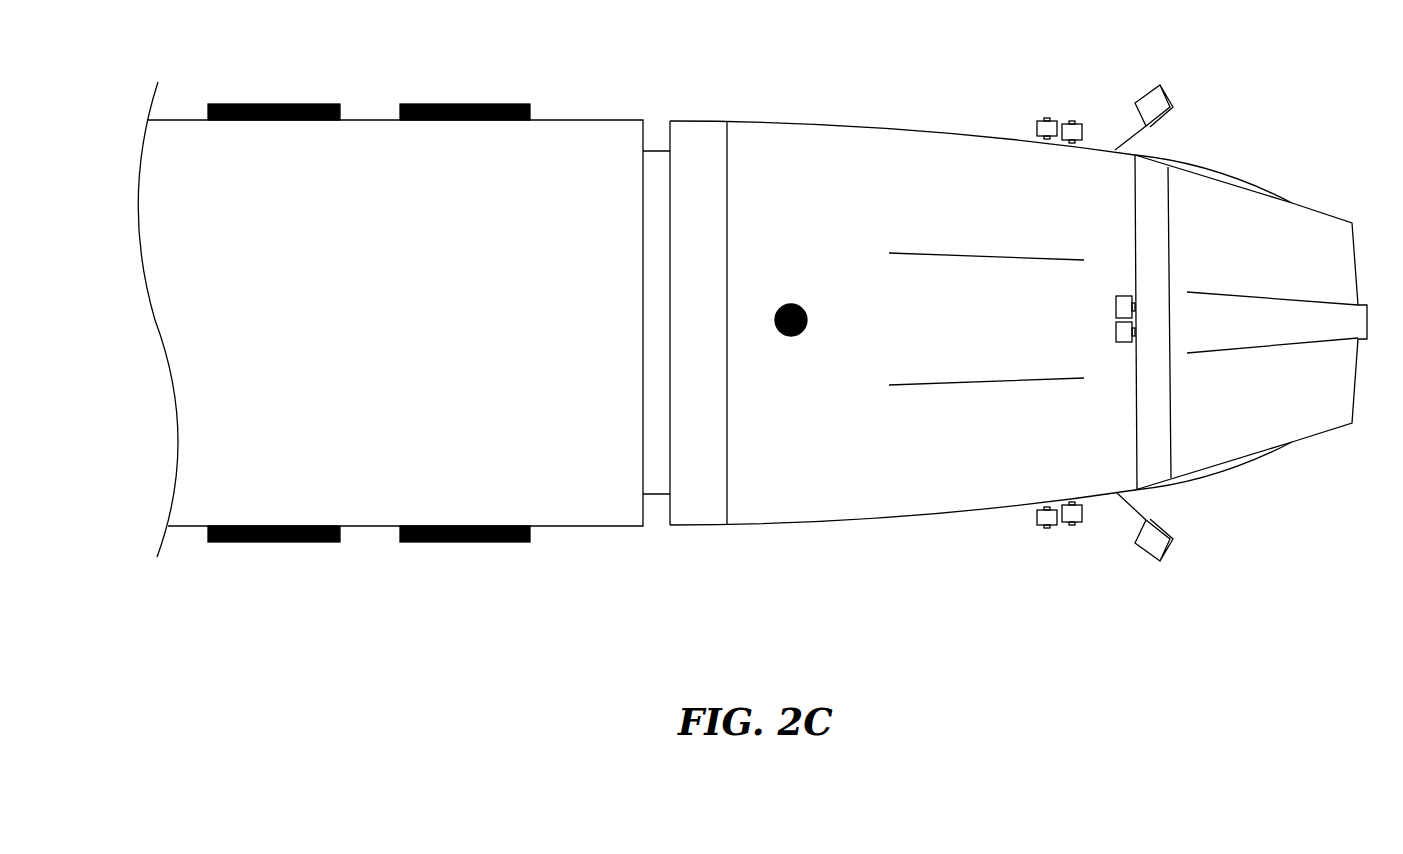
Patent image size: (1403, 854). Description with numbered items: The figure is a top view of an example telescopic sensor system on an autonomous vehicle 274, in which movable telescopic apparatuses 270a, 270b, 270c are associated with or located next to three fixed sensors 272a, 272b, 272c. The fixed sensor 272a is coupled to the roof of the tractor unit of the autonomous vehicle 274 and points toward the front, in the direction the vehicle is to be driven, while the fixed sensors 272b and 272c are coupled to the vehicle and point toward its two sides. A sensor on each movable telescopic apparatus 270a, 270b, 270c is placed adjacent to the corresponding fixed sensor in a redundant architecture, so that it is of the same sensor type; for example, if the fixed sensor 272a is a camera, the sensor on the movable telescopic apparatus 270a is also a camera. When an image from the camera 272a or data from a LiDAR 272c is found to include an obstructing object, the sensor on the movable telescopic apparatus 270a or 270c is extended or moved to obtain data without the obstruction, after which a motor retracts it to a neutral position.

The autonomous vehicle 274 is at (852, 140).
The movable telescopic apparatus 270a is at (1116, 310).
The movable telescopic apparatus 270b is at (1037, 128).
The movable telescopic apparatus 270c is at (1037, 518).
The fixed sensor 272a is at (1116, 334).
The fixed sensor 272b is at (1083, 128).
The fixed sensor 272c is at (1083, 522).